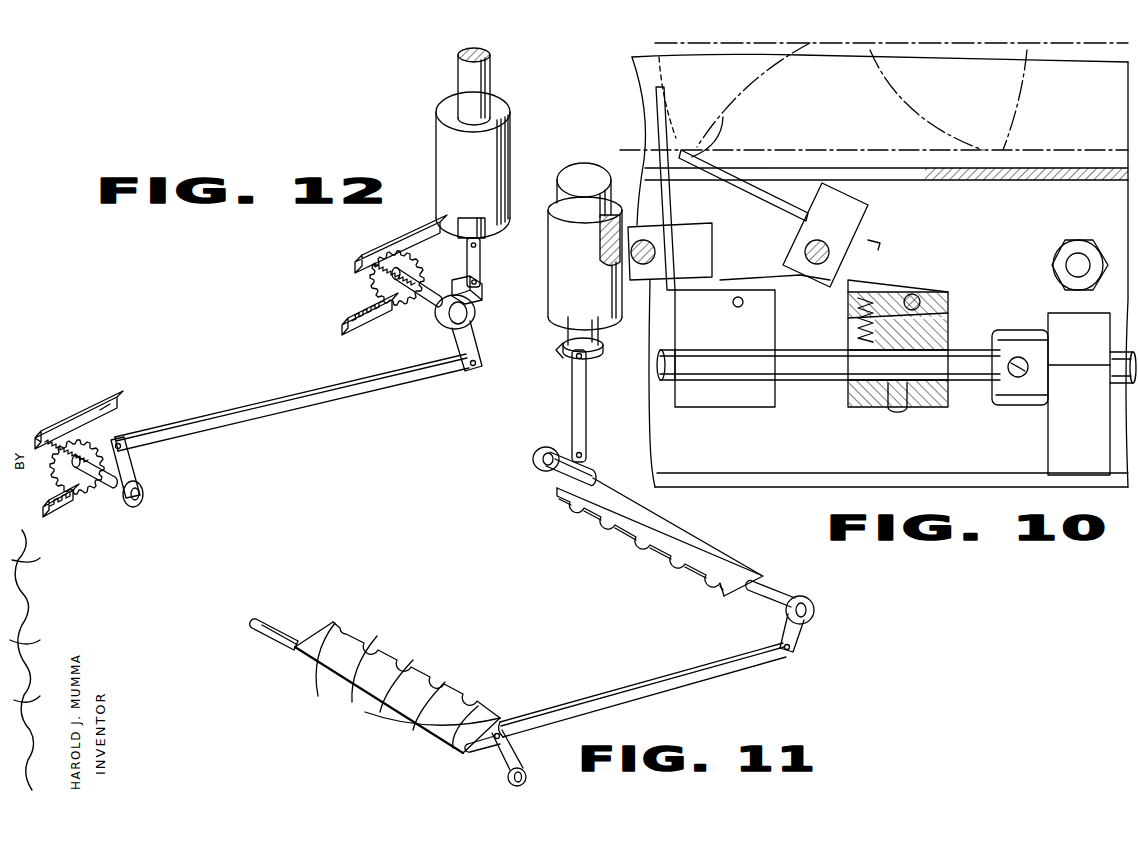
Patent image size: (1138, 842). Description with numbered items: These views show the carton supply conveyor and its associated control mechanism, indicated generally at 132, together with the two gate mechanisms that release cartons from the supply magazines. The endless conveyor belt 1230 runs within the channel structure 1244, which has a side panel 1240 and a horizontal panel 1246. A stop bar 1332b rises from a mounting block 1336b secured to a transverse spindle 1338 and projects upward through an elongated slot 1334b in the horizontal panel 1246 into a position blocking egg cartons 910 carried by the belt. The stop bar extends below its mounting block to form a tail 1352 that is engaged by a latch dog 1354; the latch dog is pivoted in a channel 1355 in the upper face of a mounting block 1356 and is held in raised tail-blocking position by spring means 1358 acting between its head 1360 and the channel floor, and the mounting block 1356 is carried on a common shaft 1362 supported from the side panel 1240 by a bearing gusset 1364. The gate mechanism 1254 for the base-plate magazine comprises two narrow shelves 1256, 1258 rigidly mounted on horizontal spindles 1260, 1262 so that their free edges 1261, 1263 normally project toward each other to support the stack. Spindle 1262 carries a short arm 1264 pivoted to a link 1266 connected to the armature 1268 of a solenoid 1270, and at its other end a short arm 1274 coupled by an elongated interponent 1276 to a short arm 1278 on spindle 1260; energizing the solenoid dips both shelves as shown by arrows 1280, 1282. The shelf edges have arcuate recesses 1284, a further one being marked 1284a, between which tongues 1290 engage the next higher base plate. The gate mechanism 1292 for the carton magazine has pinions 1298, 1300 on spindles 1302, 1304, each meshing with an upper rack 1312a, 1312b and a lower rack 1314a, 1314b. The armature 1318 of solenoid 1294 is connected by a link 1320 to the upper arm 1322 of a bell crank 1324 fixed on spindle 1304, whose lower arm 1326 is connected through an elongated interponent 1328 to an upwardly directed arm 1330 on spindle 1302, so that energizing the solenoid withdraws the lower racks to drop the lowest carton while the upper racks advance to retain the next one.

In FIG. 10, the machine frame assembly 132 is at (628, 108).
In FIG. 10, the egg cartons 910 is at (1017, 98).
In FIG. 10, the conveyor belt 1230 is at (1103, 133).
In FIG. 10, the side panel 1240 is at (752, 466).
In FIG. 10, the channel structure 1244 is at (810, 488).
In FIG. 10, the horizontal panel 1246 is at (1055, 181).
In FIG. 11, the gate mechanism 1254 is at (812, 622).
In FIG. 11, the shelf 1256 is at (397, 682).
In FIG. 11, the shelf 1258 is at (687, 545).
In FIG. 11, the horizontal spindle 1260 is at (262, 636).
In FIG. 11, the free edge 1261 is at (470, 703).
In FIG. 11, the horizontal spindle 1262 is at (770, 597).
In FIG. 11, the free edge 1263 is at (683, 572).
In FIG. 11, the short arm 1264 is at (565, 450).
In FIG. 11, the link 1266 is at (580, 413).
In FIG. 11, the armature 1268 is at (600, 341).
In FIG. 11, the solenoid 1270 is at (594, 292).
In FIG. 11, the short arm 1274 is at (797, 641).
In FIG. 11, the elongated interponent 1276 is at (668, 672).
In FIG. 11, the short arm 1278 is at (483, 770).
In FIG. 11, the arrow 1280 is at (380, 627).
In FIG. 11, the arrow 1282 is at (600, 493).
In FIG. 11, the arcuate recesses 1284 is at (617, 512).
In FIG. 11, the notch 1284a is at (380, 712).
In FIG. 11, the tongues 1290 is at (707, 590).
In FIG. 12, the gate mechanism 1292 is at (111, 500).
In FIG. 12, the solenoid 1294 is at (452, 138).
In FIG. 12, the pinion 1298 is at (72, 428).
In FIG. 12, the pinion 1300 is at (395, 266).
In FIG. 12, the spindle 1302 is at (142, 500).
In FIG. 12, the spindle 1304 is at (418, 305).
In FIG. 12, the upper rack 1312a is at (98, 405).
In FIG. 12, the upper rack 1312b is at (366, 253).
In FIG. 12, the lower rack 1314a is at (72, 498).
In FIG. 12, the lower rack 1314b is at (345, 330).
In FIG. 12, the armature 1318 is at (485, 230).
In FIG. 12, the link 1320 is at (480, 252).
In FIG. 12, the upper arm 1322 is at (476, 304).
In FIG. 12, the bell crank 1324 is at (478, 318).
In FIG. 12, the lower arm 1326 is at (478, 343).
In FIG. 12, the elongated interponent 1328 is at (342, 396).
In FIG. 12, the arm 1330 is at (128, 462).
In FIG. 10, the stop bar 1332b is at (662, 113).
In FIG. 10, the elongated slot 1334b is at (904, 160).
In FIG. 10, the mounting block 1336b is at (690, 230).
In FIG. 10, the transverse spindle 1338 is at (803, 254).
In FIG. 10, the tail 1352 is at (850, 240).
In FIG. 10, the latch dog 1354 is at (856, 298).
In FIG. 10, the channel 1355 is at (853, 318).
In FIG. 10, the mounting block 1356 is at (746, 374).
In FIG. 10, the spring means 1358 is at (856, 336).
In FIG. 10, the head 1360 is at (870, 290).
In FIG. 10, the shaft 1362 is at (808, 368).
In FIG. 10, the bearing gusset 1364 is at (1085, 440).